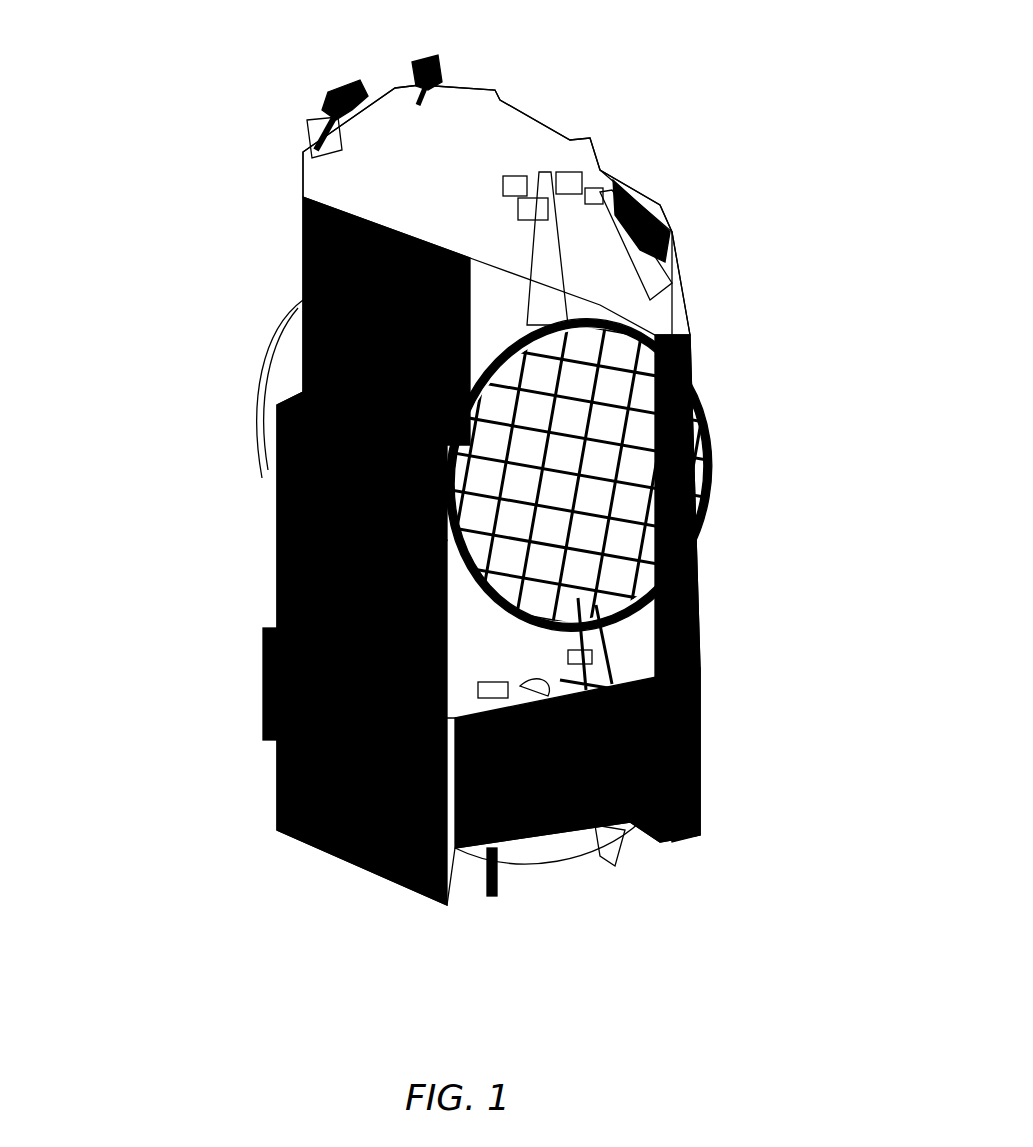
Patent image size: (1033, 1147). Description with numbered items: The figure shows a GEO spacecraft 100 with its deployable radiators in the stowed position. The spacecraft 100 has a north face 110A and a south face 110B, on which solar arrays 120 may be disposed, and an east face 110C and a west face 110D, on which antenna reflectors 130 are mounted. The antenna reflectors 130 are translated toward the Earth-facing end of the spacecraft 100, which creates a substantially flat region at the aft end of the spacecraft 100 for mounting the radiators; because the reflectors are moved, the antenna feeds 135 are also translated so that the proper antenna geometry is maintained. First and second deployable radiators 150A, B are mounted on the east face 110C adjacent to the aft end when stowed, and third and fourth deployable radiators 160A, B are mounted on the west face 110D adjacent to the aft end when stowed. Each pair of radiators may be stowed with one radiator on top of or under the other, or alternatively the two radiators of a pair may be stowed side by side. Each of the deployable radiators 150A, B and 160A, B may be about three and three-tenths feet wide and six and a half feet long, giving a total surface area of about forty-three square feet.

The GEO spacecraft 100 is at (588, 56).
The north face 110A is at (338, 343).
The south face 110B is at (722, 183).
The east face 110C is at (620, 622).
The west face 110D is at (150, 352).
The solar arrays 120 is at (322, 718).
The antenna reflectors 130 is at (640, 465).
The antenna feeds 135 is at (680, 272).
The first and second deployable radiators 150A, B is at (622, 770).
The third and fourth deployable radiators 160A, B is at (258, 671).